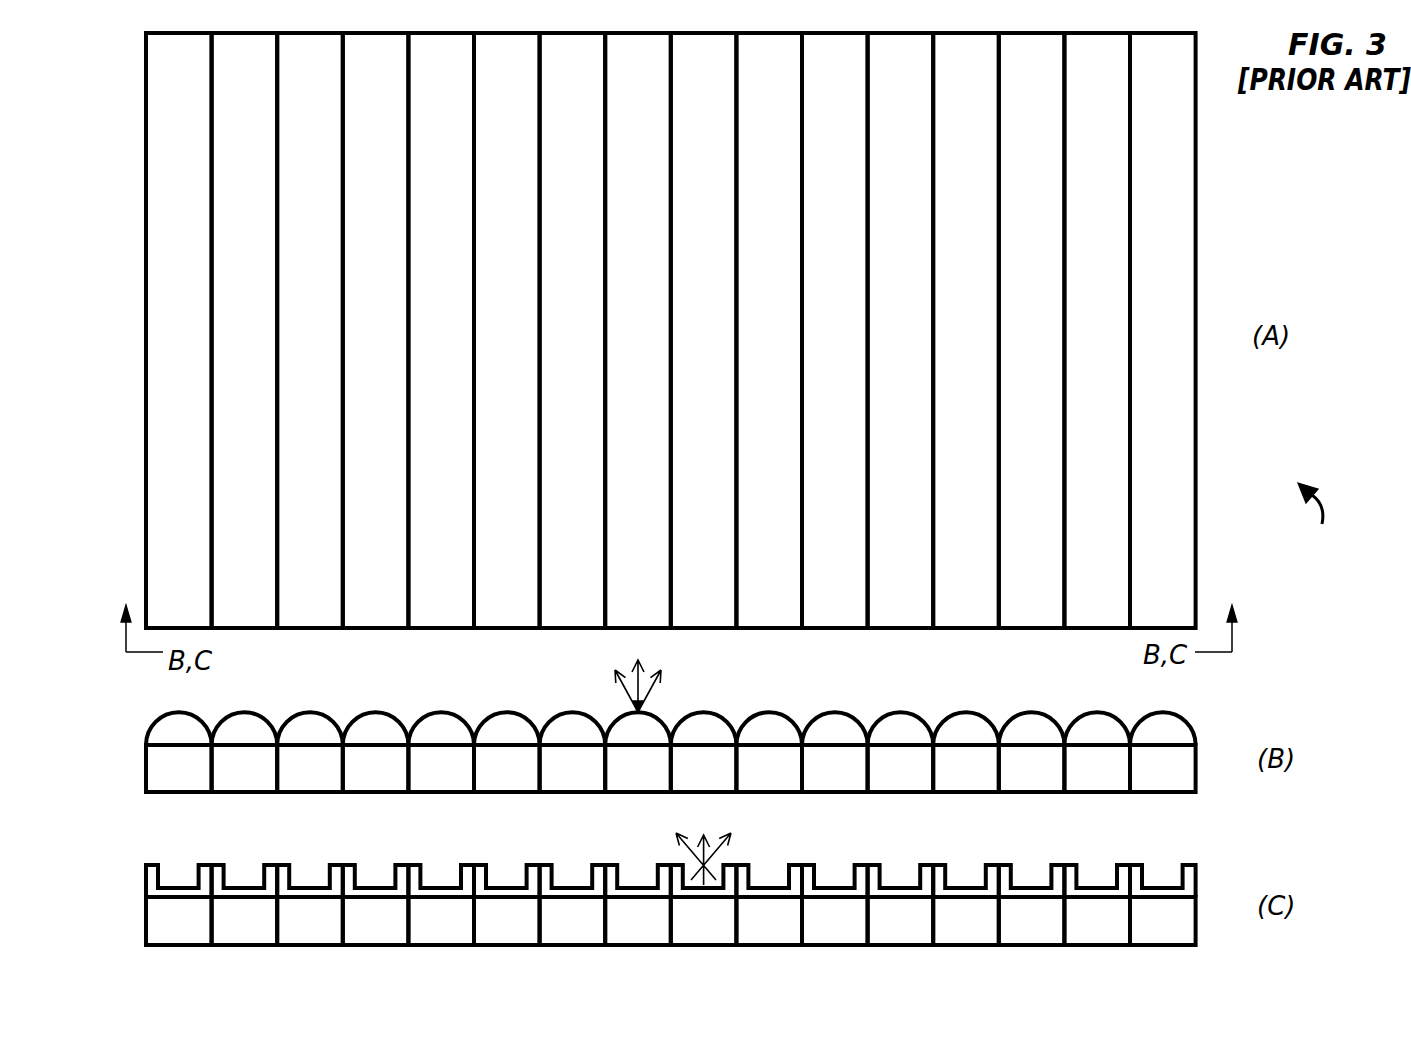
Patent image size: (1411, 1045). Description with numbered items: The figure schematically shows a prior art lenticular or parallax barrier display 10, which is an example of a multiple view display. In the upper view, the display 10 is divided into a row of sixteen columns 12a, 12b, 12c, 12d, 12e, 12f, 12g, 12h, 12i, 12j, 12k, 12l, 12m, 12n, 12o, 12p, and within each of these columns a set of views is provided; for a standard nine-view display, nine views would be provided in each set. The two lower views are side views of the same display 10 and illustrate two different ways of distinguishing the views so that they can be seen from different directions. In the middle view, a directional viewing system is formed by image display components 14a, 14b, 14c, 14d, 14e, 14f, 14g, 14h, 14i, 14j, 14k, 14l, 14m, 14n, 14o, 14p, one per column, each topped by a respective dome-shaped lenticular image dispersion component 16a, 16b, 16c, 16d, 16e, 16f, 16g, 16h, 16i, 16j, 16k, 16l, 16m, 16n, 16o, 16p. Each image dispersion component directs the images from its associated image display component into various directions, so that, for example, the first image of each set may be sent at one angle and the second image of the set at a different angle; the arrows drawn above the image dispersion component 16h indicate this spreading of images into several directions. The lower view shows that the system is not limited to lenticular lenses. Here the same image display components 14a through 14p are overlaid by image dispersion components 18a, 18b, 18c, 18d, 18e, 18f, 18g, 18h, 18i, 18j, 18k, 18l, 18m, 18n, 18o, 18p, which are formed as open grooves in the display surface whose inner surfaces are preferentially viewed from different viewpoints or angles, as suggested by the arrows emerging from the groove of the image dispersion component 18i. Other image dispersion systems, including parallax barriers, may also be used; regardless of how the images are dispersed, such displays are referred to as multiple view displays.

The lenticular or parallax barrier display 10 is at (1316, 526).
The column 12a is at (179, 330).
The column 12b is at (245, 330).
The column 12c is at (310, 330).
The column 12d is at (376, 330).
The column 12e is at (441, 330).
The column 12f is at (507, 330).
The column 12g is at (573, 330).
The column 12h is at (638, 330).
The column 12i is at (704, 330).
The column 12j is at (769, 330).
The column 12k is at (835, 330).
The column 12l is at (901, 330).
The column 12m is at (966, 330).
The column 12n is at (1032, 330).
The column 12o is at (1097, 330).
The column 12p is at (1163, 330).
The image display component 14a is at (179, 845).
The image display component 14b is at (245, 845).
The image display component 14c is at (310, 845).
The image display component 14d is at (376, 845).
The image display component 14e is at (441, 845).
The image display component 14f is at (507, 845).
The image display component 14g is at (573, 845).
The image display component 14h is at (638, 845).
The image display component 14i is at (704, 845).
The image display component 14j is at (769, 845).
The image display component 14k is at (835, 845).
The image display component 14l is at (901, 845).
The image display component 14m is at (966, 845).
The image display component 14n is at (1032, 845).
The image display component 14o is at (1097, 845).
The image display component 14p is at (1163, 845).
The image dispersion component 16a is at (179, 728).
The image dispersion component 16b is at (245, 728).
The image dispersion component 16c is at (310, 728).
The image dispersion component 16d is at (376, 728).
The image dispersion component 16e is at (441, 728).
The image dispersion component 16f is at (507, 728).
The image dispersion component 16g is at (573, 728).
The image dispersion component 16h is at (638, 702).
The image dispersion component 16i is at (704, 728).
The image dispersion component 16j is at (769, 728).
The image dispersion component 16k is at (835, 728).
The image dispersion component 16l is at (901, 728).
The image dispersion component 16m is at (966, 728).
The image dispersion component 16n is at (1032, 728).
The image dispersion component 16o is at (1097, 728).
The image dispersion component 16p is at (1163, 728).
The image dispersion component 18a is at (179, 864).
The image dispersion component 18b is at (245, 864).
The image dispersion component 18c is at (310, 864).
The image dispersion component 18d is at (376, 864).
The image dispersion component 18e is at (441, 864).
The image dispersion component 18f is at (507, 864).
The image dispersion component 18g is at (573, 864).
The image dispersion component 18h is at (638, 864).
The image dispersion component 18i is at (712, 864).
The image dispersion component 18j is at (769, 864).
The image dispersion component 18k is at (835, 864).
The image dispersion component 18l is at (901, 864).
The image dispersion component 18m is at (966, 864).
The image dispersion component 18n is at (1032, 864).
The image dispersion component 18o is at (1097, 864).
The image dispersion component 18p is at (1163, 864).